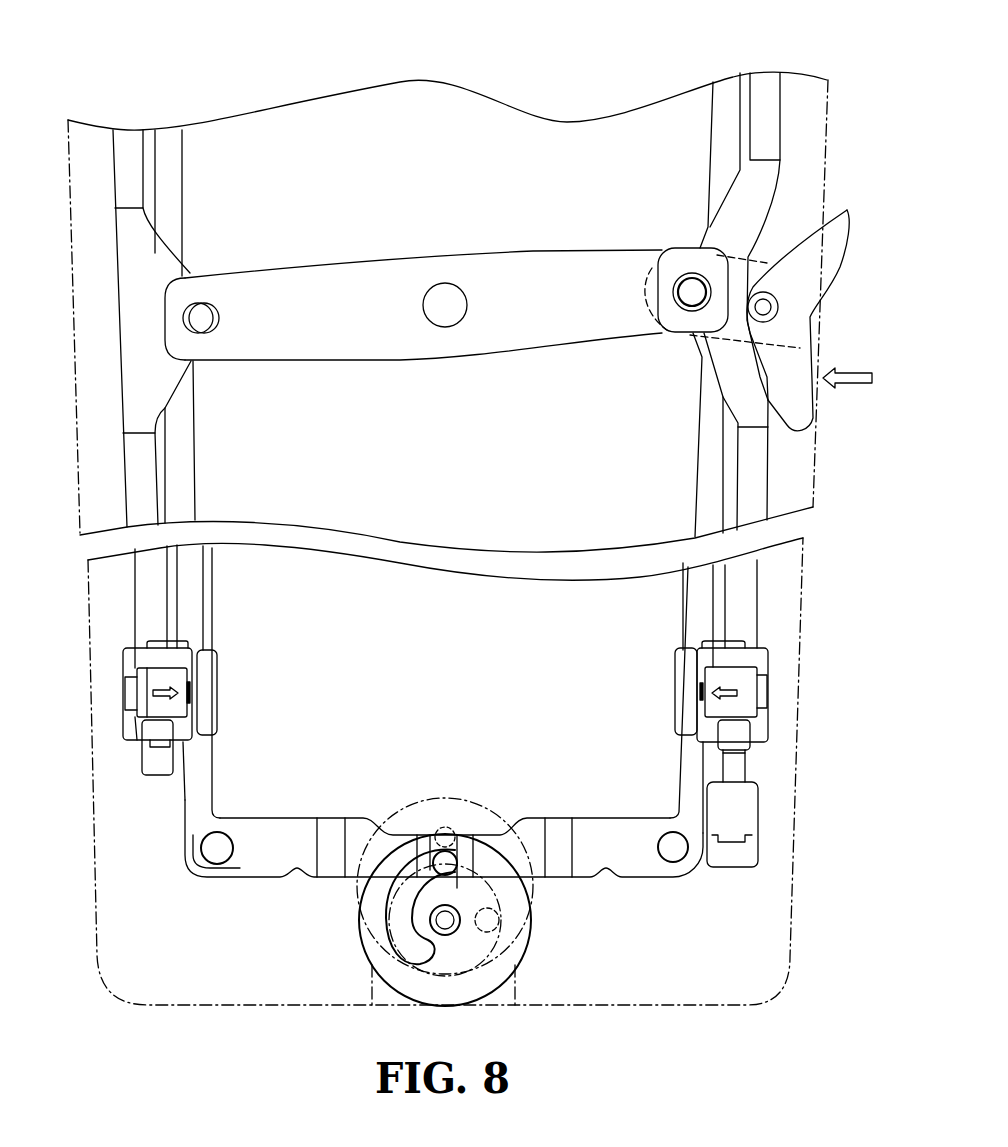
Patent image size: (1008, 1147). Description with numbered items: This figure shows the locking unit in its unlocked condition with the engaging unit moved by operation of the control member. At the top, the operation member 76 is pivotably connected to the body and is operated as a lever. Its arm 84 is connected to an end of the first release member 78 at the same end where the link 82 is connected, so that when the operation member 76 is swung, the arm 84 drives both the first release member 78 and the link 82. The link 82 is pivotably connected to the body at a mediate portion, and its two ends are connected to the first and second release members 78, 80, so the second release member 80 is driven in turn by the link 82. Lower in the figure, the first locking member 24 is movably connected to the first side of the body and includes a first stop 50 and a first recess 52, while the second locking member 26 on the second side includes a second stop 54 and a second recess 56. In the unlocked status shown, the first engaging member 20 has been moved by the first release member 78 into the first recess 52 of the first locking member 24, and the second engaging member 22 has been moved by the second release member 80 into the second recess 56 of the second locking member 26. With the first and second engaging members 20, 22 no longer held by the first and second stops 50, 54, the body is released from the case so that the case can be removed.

The first engaging member 20 is at (757, 692).
The second engaging member 22 is at (137, 690).
The first locking member 24 is at (702, 603).
The second locking member 26 is at (190, 605).
The first stop 50 is at (705, 655).
The first recess 52 is at (705, 722).
The second stop 54 is at (187, 653).
The second recess 56 is at (187, 722).
The operation member 76 is at (793, 348).
The first release member 78 is at (750, 487).
The second release member 80 is at (143, 485).
The link 82 is at (528, 278).
The arm 84 is at (652, 268).